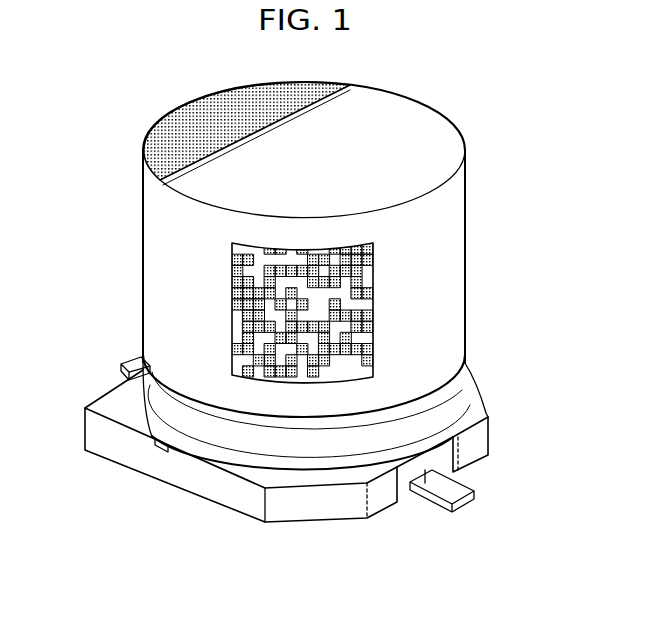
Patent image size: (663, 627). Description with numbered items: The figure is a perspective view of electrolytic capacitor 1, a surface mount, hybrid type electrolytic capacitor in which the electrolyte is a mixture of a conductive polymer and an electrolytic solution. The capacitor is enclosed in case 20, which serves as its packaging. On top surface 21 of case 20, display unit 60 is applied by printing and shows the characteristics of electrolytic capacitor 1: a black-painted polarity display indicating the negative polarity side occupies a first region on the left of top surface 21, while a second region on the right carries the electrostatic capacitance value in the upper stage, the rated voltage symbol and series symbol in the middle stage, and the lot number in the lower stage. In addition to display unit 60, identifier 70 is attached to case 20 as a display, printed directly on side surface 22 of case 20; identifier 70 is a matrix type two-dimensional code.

The electrolytic capacitor 1 is at (112, 129).
The case 20 is at (461, 227).
The top surface 21 is at (372, 100).
The side surface 22 is at (152, 311).
The display unit 60 is at (423, 125).
The identifier 70 is at (374, 276).